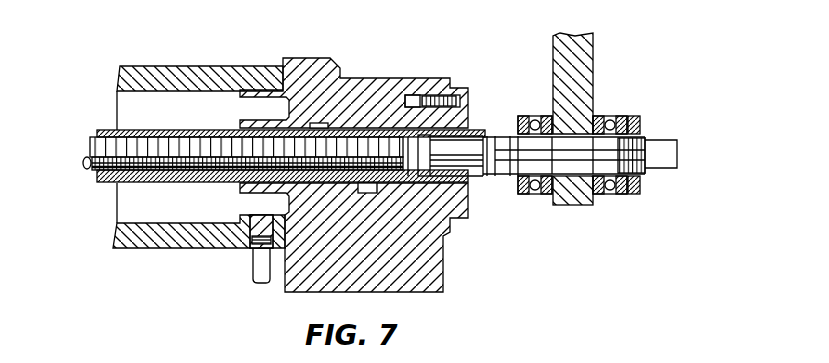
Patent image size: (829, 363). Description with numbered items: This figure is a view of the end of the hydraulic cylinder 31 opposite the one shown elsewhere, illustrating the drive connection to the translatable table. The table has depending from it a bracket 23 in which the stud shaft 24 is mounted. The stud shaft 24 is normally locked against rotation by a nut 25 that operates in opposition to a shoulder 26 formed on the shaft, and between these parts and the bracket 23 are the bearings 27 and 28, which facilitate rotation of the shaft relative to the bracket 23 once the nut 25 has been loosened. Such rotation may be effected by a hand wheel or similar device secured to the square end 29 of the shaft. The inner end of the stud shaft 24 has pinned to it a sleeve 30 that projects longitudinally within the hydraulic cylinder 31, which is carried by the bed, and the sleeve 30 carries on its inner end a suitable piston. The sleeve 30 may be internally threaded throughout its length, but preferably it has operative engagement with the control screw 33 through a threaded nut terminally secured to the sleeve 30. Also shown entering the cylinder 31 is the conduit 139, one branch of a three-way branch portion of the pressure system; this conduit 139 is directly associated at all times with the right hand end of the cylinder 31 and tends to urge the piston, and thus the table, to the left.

The bracket 23 is at (587, 63).
The stud shaft 24 is at (578, 160).
The nut 25 is at (643, 130).
The shoulder 26 is at (511, 128).
The bearing 27 is at (537, 195).
The bearing 28 is at (603, 195).
The square end 29 is at (677, 157).
The sleeve 30 is at (168, 131).
The hydraulic cylinder 31 is at (187, 249).
The control screw 33 is at (90, 147).
The conduit 139 is at (260, 280).